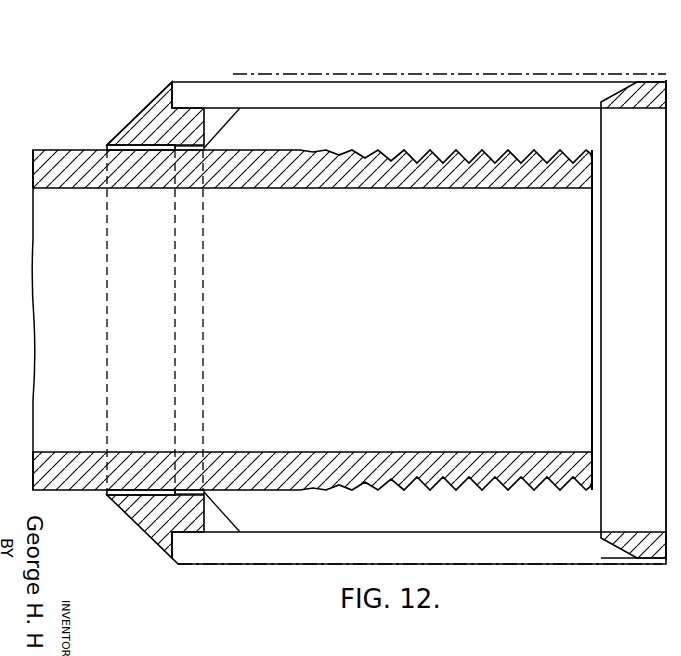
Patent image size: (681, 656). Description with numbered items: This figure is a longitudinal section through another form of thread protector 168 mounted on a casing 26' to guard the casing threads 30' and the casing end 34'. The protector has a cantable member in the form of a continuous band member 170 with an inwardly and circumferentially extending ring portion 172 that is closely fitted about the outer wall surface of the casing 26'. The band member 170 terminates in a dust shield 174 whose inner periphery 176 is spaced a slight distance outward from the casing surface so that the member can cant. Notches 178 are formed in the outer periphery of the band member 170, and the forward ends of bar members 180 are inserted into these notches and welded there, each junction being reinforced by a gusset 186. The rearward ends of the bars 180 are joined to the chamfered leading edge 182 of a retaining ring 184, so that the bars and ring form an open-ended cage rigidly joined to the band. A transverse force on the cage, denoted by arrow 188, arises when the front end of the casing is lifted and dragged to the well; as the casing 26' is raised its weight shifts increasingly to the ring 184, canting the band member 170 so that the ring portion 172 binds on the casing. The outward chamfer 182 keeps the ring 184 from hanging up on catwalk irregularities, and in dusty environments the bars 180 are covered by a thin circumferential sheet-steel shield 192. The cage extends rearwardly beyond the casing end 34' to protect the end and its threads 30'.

The casing 26' is at (312, 183).
The casing threads 30' is at (312, 482).
The casing end 34' is at (614, 320).
The protector 168 is at (398, 90).
The band member 170 is at (159, 95).
The ring portion 172 is at (205, 146).
The dust shield 174 is at (116, 137).
The inner periphery 176 is at (132, 150).
The notches 178 is at (187, 92).
The bar members 180 is at (448, 92).
The chamfered leading edge 182 is at (613, 102).
The retaining ring 184 is at (639, 109).
The gusset 186 is at (242, 118).
The arrow 188 is at (655, 565).
The shield 192 is at (526, 566).